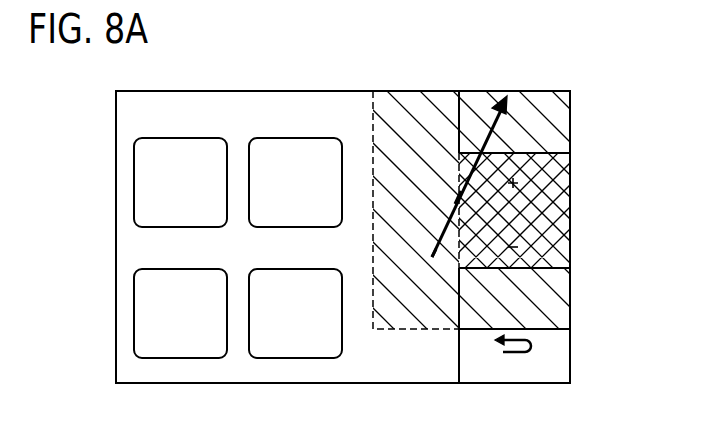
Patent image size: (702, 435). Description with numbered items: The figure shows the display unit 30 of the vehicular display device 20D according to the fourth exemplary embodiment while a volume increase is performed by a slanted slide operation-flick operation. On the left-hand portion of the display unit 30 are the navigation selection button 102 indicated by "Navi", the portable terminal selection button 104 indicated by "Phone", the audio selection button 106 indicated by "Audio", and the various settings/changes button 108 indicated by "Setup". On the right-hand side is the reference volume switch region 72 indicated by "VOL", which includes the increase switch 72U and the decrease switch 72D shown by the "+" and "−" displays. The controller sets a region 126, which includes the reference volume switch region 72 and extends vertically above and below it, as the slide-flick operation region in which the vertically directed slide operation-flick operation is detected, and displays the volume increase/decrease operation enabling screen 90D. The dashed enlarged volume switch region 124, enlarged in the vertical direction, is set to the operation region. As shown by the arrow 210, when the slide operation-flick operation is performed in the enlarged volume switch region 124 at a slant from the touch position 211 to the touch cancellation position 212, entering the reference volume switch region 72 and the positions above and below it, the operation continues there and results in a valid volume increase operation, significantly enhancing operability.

The display unit 30 is at (219, 90).
The vehicular display device 20D is at (345, 91).
The enlarged volume switch region 124 is at (391, 331).
The volume increase/decrease operation enabling screen 90D is at (414, 336).
The navigation selection button 102 is at (181, 137).
The portable terminal selection button 104 is at (268, 137).
The audio selection button 106 is at (181, 268).
The various settings/changes button 108 is at (268, 268).
The reference volume switch region 72 is at (538, 212).
The increase switch 72U is at (536, 183).
The decrease switch 72D is at (536, 249).
The region 126 is at (500, 90).
The touch cancellation position 212 is at (508, 98).
The arrow 210 is at (458, 197).
The touch position 211 is at (432, 257).